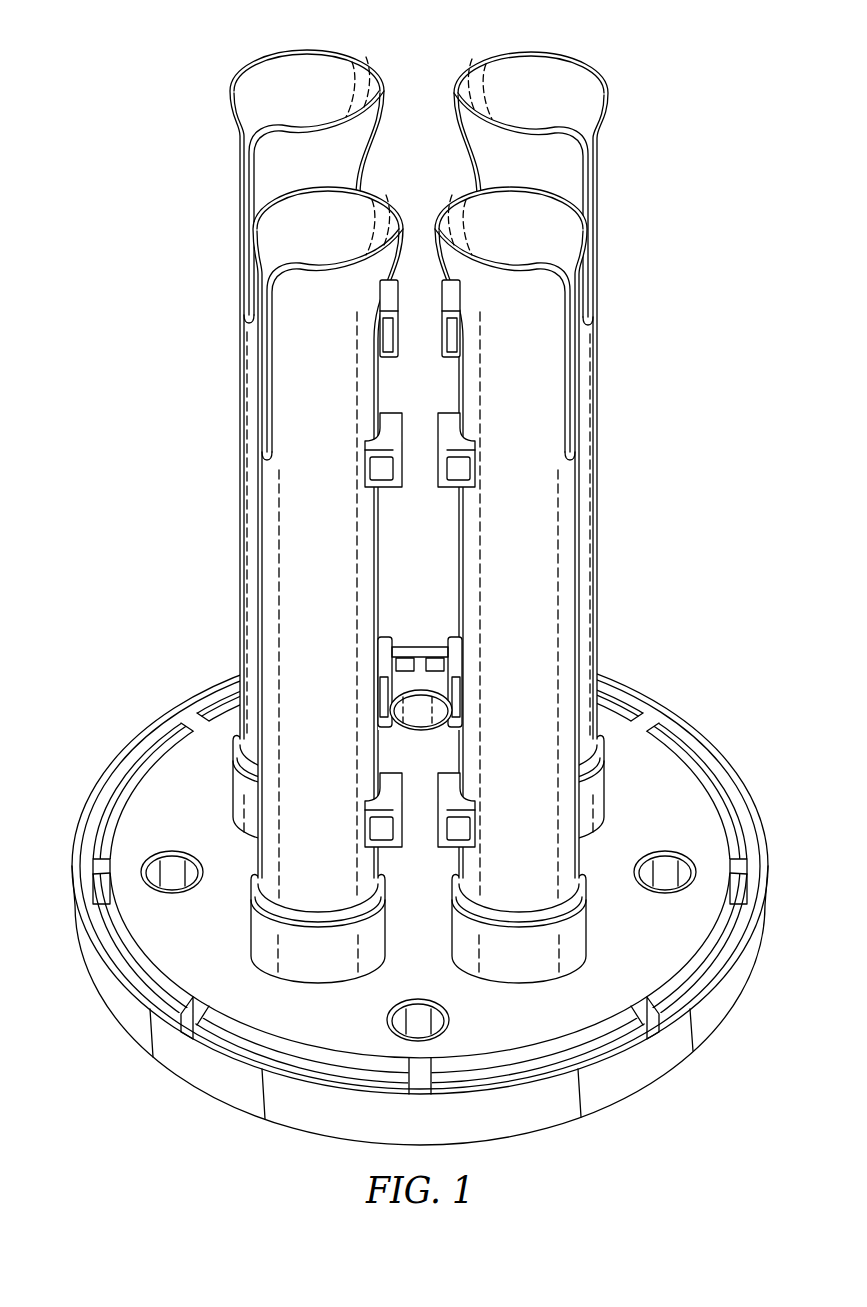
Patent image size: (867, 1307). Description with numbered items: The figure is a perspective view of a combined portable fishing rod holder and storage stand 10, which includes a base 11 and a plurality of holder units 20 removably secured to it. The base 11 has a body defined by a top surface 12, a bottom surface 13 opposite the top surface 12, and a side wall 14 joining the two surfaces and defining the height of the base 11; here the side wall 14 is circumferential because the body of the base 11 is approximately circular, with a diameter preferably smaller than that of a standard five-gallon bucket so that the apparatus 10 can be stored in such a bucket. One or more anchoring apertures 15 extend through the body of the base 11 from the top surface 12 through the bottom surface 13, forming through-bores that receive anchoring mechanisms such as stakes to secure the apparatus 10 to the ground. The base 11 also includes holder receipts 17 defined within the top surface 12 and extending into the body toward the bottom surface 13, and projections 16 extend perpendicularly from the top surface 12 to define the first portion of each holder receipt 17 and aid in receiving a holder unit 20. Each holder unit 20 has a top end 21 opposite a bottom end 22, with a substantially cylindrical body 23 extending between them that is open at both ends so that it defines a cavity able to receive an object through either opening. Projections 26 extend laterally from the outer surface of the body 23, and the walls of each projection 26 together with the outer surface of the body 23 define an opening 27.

The combined portable fishing rod holder and storage stand 10 is at (216, 30).
The base 11 is at (134, 1073).
The top surface 12 is at (197, 824).
The bottom surface 13 is at (634, 1100).
The side wall 14 is at (150, 728).
The anchoring aperture 15 is at (425, 1008).
The projection 16 is at (537, 950).
The holder receipt 17 is at (594, 912).
The holder unit 20 is at (238, 368).
The top end 21 is at (597, 128).
The bottom end 22 is at (606, 640).
The body 23 is at (297, 572).
The projection 26 is at (441, 303).
The opening 27 is at (462, 463).